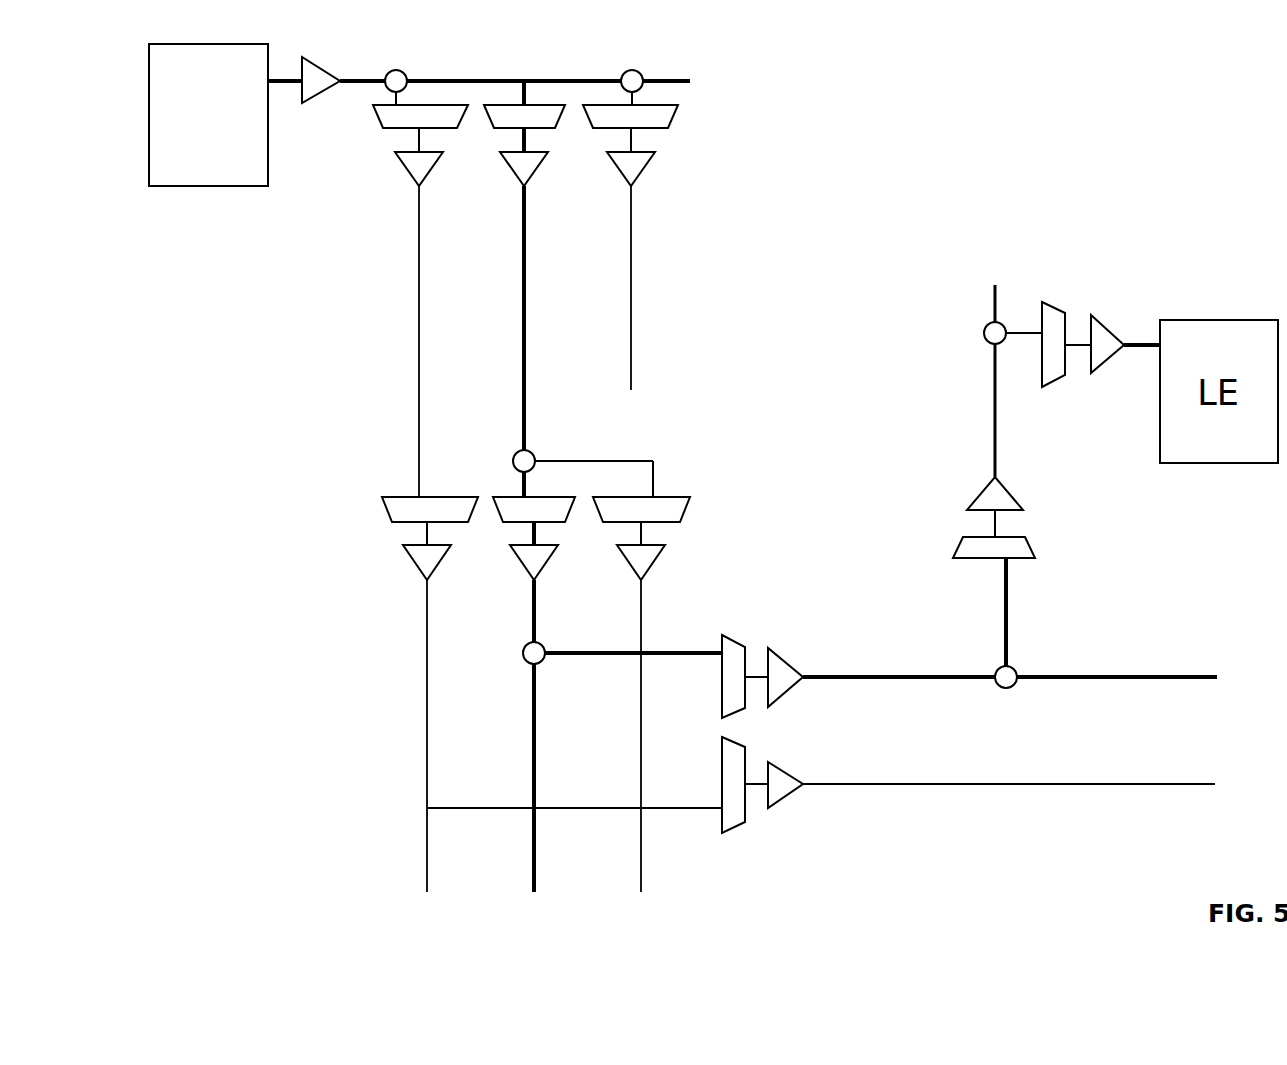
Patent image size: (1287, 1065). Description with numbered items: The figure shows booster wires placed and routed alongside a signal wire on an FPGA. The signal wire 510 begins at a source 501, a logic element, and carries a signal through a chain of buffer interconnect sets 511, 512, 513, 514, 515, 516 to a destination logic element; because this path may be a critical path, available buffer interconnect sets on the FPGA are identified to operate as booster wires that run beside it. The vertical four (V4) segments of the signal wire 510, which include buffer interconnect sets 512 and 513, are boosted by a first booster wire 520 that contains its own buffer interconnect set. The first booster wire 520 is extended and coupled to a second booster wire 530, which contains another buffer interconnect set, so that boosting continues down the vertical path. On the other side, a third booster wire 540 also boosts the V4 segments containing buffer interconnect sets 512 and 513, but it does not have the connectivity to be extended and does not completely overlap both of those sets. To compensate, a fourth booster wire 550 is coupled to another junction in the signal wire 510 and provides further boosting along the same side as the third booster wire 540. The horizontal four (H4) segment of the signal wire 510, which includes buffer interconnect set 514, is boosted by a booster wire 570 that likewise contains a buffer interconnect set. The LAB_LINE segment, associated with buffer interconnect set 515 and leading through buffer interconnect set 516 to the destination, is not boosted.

The source 501 is at (259, 178).
The signal wire 510 is at (279, 84).
The buffer interconnect set 511 is at (441, 72).
The buffer interconnect set 512 is at (538, 316).
The buffer interconnect set 513 is at (505, 632).
The buffer interconnect set 514 is at (888, 676).
The buffer interconnect set 515 is at (1002, 400).
The buffer interconnect set 516 is at (1140, 337).
The first booster wire 520 is at (322, 257).
The second booster wire 530 is at (307, 735).
The third booster wire 540 is at (647, 337).
The fourth booster wire 550 is at (643, 645).
The booster wire 570 is at (912, 785).